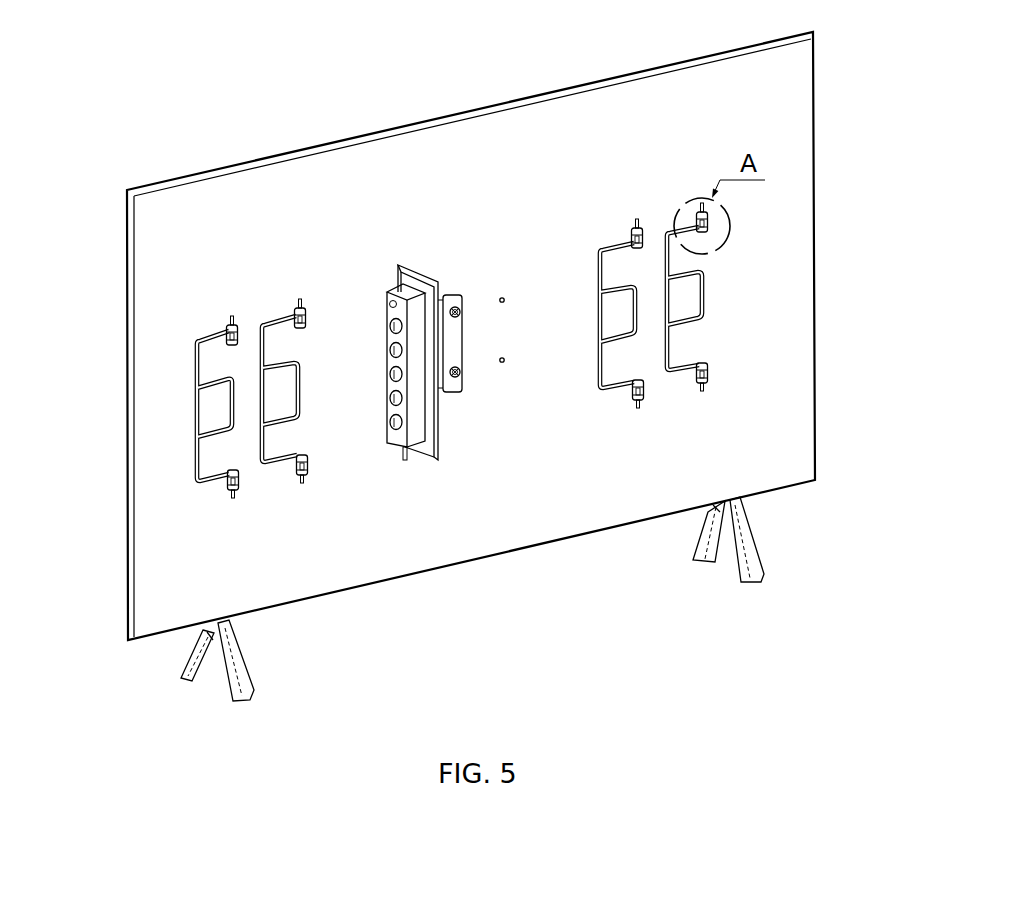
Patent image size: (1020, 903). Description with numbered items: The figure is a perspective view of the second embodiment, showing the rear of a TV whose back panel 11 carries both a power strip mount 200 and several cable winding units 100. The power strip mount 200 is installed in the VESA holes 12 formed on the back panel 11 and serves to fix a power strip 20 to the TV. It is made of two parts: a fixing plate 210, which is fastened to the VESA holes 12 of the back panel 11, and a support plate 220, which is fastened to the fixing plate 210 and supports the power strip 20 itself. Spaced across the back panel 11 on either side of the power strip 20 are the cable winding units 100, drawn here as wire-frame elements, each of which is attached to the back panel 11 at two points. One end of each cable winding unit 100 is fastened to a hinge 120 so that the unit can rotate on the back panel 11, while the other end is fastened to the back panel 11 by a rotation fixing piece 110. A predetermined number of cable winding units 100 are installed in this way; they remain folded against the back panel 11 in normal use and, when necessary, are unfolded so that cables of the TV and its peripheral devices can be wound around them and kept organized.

The back panel 11 is at (797, 87).
The VESA holes 12 is at (502, 372).
The power strip 20 is at (396, 447).
The cable winding unit 100 is at (168, 380).
The rotation fixing piece 110 is at (220, 314).
The hinge 120 is at (227, 496).
The power strip mount 200 is at (437, 311).
The fixing plate 210 is at (452, 393).
The support plate 220 is at (399, 266).